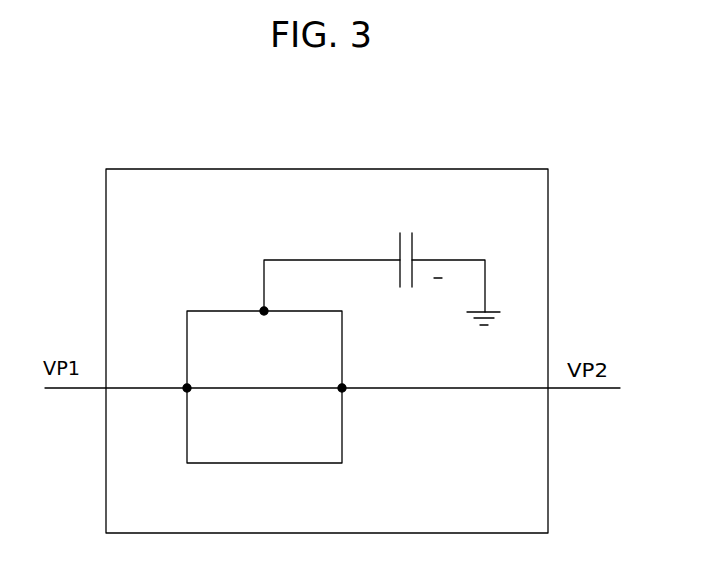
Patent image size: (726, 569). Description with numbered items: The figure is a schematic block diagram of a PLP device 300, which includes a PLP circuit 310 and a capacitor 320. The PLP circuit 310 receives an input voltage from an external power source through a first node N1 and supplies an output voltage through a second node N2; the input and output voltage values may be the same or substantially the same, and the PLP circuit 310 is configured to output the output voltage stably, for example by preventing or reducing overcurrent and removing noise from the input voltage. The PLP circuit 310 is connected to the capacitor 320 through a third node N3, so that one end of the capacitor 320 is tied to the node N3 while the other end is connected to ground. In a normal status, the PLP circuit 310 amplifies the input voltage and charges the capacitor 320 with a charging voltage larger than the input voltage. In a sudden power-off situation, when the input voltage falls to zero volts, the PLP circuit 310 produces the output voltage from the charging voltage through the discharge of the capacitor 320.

The PLP device 300 is at (326, 168).
The PLP circuit 310 is at (263, 467).
The capacitor 320 is at (413, 245).
The node N1 is at (184, 392).
The node N2 is at (345, 391).
The node N3 is at (261, 306).